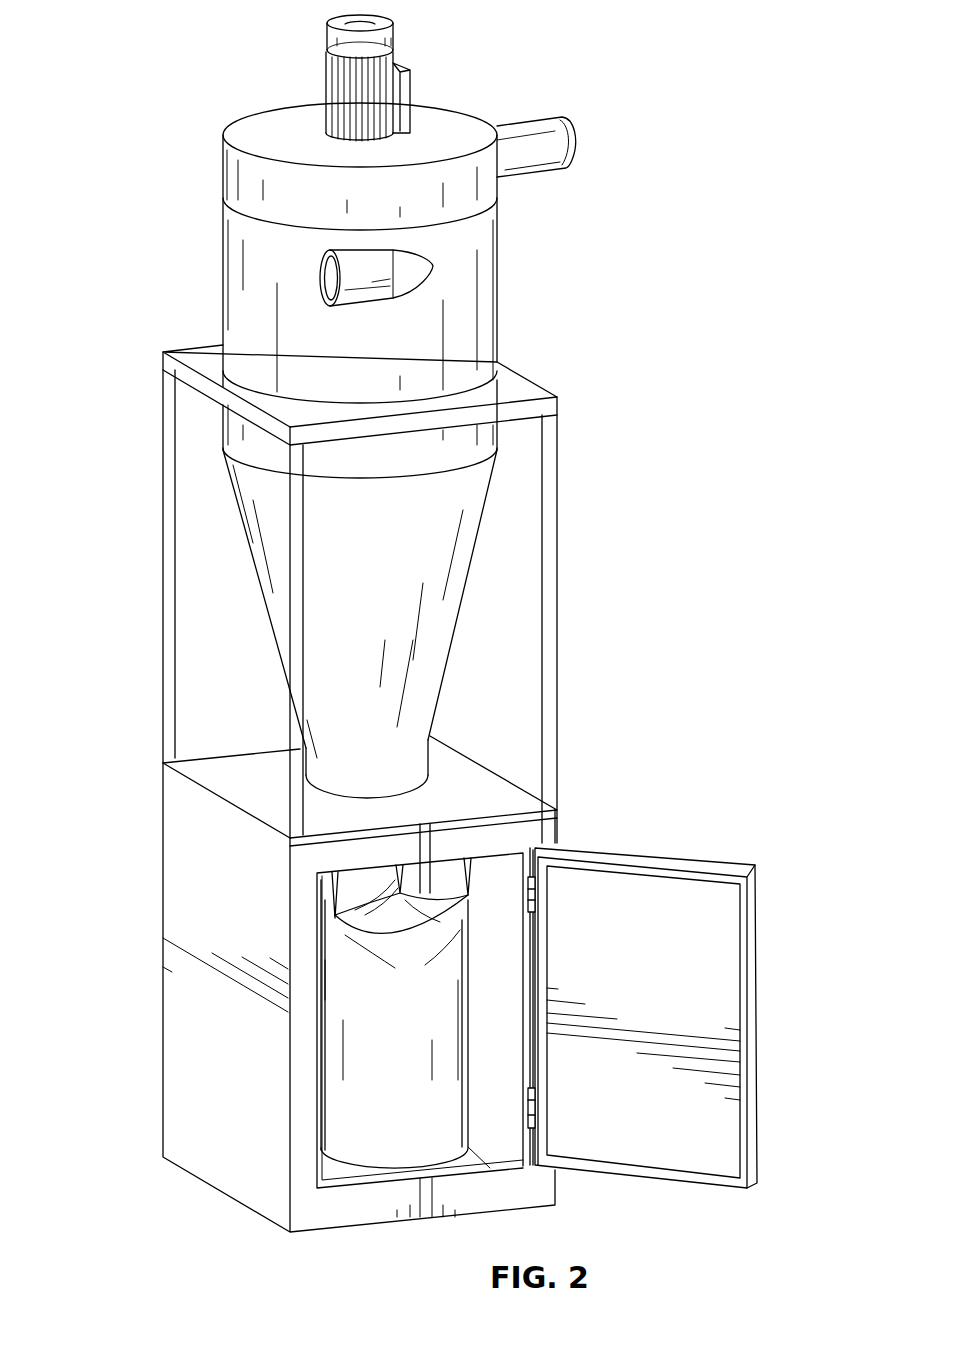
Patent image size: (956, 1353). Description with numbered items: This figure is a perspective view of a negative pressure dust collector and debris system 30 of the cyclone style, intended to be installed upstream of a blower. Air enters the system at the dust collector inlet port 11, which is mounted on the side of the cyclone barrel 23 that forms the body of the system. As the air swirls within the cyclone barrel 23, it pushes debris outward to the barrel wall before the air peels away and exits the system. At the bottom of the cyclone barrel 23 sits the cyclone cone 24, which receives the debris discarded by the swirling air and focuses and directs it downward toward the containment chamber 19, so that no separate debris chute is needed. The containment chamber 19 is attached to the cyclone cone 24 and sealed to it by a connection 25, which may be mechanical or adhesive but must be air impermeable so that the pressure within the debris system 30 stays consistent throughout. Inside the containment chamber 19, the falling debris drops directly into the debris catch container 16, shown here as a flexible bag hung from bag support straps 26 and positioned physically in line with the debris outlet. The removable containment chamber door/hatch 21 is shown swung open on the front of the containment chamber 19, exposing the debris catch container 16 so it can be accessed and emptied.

The negative pressure dust collector and debris system 30 is at (112, 22).
The cyclone barrel 23 is at (222, 300).
The dust collector inlet port 11 is at (362, 273).
The cyclone cone 24 is at (260, 585).
The connection 25 is at (437, 785).
The containment chamber 19 is at (192, 913).
The debris catch container 16 is at (337, 1092).
The bag support straps 26 is at (470, 873).
The removable containment chamber door/hatch 21 is at (752, 904).